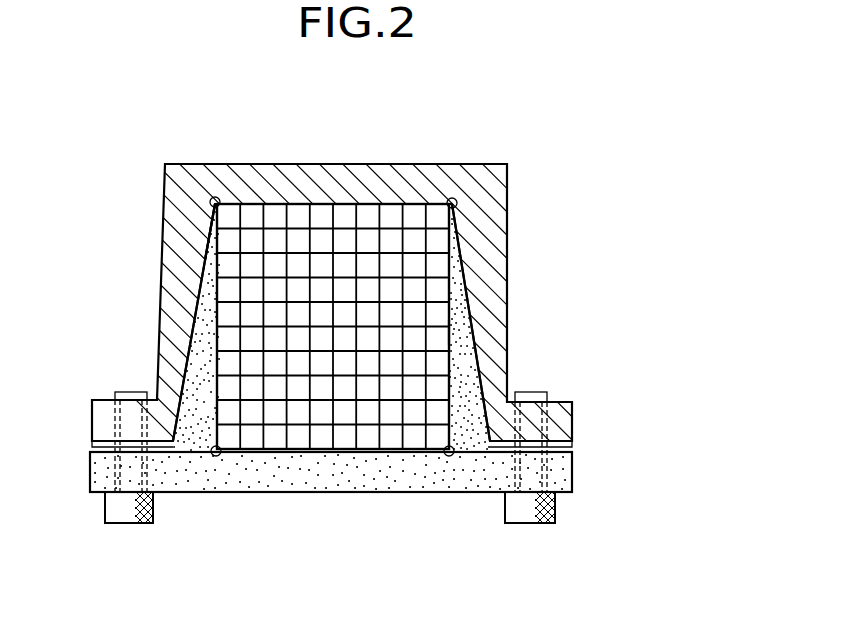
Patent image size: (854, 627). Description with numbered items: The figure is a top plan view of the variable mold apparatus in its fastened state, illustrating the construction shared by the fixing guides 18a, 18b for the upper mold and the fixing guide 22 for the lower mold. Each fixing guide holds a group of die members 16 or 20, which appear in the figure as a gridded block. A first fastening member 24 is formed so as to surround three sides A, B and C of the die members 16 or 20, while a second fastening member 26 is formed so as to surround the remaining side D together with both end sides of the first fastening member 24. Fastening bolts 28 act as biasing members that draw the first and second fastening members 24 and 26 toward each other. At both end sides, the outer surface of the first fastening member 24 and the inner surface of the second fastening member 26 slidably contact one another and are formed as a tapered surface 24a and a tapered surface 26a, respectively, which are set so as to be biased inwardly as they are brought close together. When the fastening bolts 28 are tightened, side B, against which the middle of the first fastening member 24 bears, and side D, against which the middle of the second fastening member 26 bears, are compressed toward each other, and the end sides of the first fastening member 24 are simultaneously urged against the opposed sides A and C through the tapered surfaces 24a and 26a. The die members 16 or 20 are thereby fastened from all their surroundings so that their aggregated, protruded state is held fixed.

The die members 16 is at (341, 277).
The die members 20 is at (373, 229).
The fixing guide 18a is at (405, 292).
The fixing guide 18b is at (332, 305).
The fixing guide 22 is at (516, 199).
The first fastening member 24 is at (374, 468).
The tapered surface 24a is at (173, 430).
The second fastening member 26 is at (427, 305).
The tapered surface 26a is at (205, 292).
The fastening bolts 28 is at (130, 515).
The side of the die members A is at (207, 253).
The side of the die members B is at (320, 452).
The side of the die members C is at (450, 333).
The side of the die members D is at (330, 203).